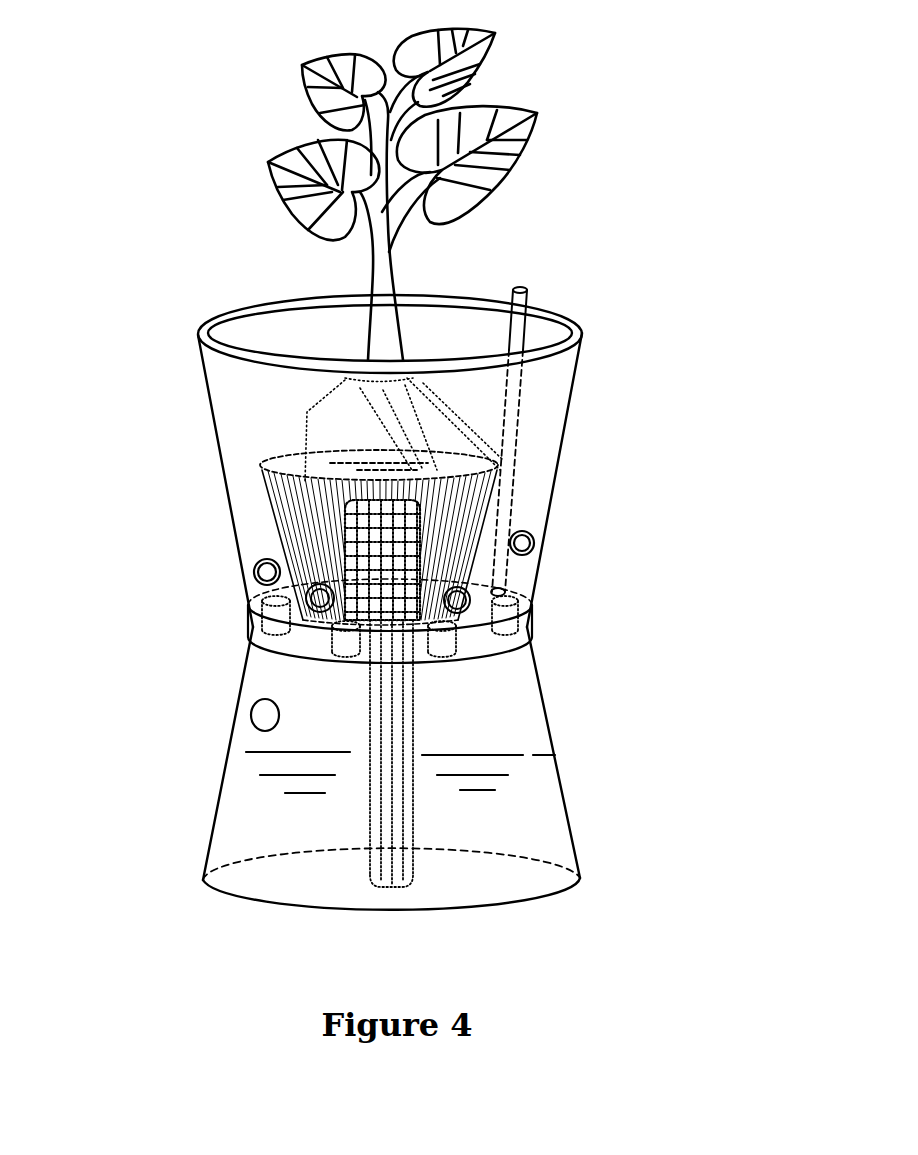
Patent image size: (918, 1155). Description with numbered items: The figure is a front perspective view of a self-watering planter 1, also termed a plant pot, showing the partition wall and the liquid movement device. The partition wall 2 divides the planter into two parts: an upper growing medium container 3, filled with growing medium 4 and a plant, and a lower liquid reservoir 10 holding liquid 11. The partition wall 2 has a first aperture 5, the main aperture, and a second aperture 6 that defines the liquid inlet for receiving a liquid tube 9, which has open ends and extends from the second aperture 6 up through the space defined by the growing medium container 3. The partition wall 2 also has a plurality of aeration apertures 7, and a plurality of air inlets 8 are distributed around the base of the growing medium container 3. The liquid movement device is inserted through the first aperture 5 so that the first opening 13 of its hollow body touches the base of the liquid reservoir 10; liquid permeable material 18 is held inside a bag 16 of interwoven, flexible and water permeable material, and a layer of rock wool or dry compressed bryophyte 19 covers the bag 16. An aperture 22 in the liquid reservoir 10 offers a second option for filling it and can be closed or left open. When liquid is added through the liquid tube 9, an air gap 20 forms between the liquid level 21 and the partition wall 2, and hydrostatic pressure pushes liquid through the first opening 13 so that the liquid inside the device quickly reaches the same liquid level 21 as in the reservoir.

The planter 1 is at (553, 385).
The partition wall 2 is at (505, 622).
The growing medium container 3 is at (205, 372).
The growing medium 4 is at (247, 455).
The first aperture 5 is at (502, 753).
The second aperture 6 is at (505, 592).
The aeration aperture 7 is at (274, 625).
The air inlet 8 is at (256, 572).
The liquid tube 9 is at (520, 300).
The liquid reservoir 10 is at (255, 677).
The liquid 11 is at (255, 808).
The first opening 13 is at (407, 883).
The bag 16 is at (420, 547).
The liquid permeable material 18 is at (547, 486).
The layer of rock wool or dry compressed bryophyte 19 is at (283, 498).
The air gap 20 is at (502, 727).
The liquid level 21 is at (533, 755).
The aperture in liquid reservoir 22 is at (268, 717).